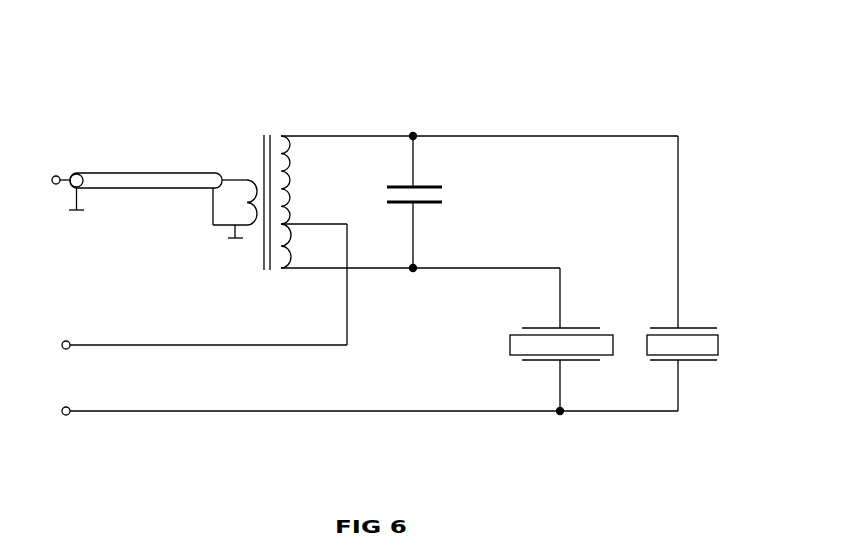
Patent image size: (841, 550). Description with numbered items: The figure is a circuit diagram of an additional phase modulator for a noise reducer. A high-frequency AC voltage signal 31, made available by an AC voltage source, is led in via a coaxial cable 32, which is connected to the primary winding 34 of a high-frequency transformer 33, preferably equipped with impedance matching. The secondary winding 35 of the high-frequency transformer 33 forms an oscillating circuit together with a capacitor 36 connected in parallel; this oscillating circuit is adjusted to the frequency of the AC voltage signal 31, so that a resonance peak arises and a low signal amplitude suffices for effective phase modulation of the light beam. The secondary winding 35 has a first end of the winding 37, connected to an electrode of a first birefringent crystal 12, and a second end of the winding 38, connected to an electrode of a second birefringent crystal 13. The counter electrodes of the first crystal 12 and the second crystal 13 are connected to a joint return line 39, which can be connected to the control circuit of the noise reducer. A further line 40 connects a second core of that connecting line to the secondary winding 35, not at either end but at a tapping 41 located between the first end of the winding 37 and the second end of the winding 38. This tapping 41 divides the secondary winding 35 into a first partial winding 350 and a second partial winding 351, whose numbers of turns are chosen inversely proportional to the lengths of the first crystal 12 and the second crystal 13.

The high-frequency AC voltage signal 31 is at (55, 176).
The coaxial cable 32 is at (145, 172).
The high-frequency transformer 33 is at (268, 128).
The primary winding 34 is at (238, 178).
The secondary winding 35 is at (254, 174).
The capacitor 36 is at (423, 180).
The first end of the winding 37 is at (282, 270).
The second end of the winding 38 is at (285, 134).
The joint return line 39 is at (355, 413).
The line 40 is at (267, 347).
The tapping 41 is at (288, 222).
The first partial winding 350 is at (291, 246).
The second partial winding 351 is at (290, 173).
The first birefringent crystal 12 is at (523, 343).
The second birefringent crystal 13 is at (710, 348).